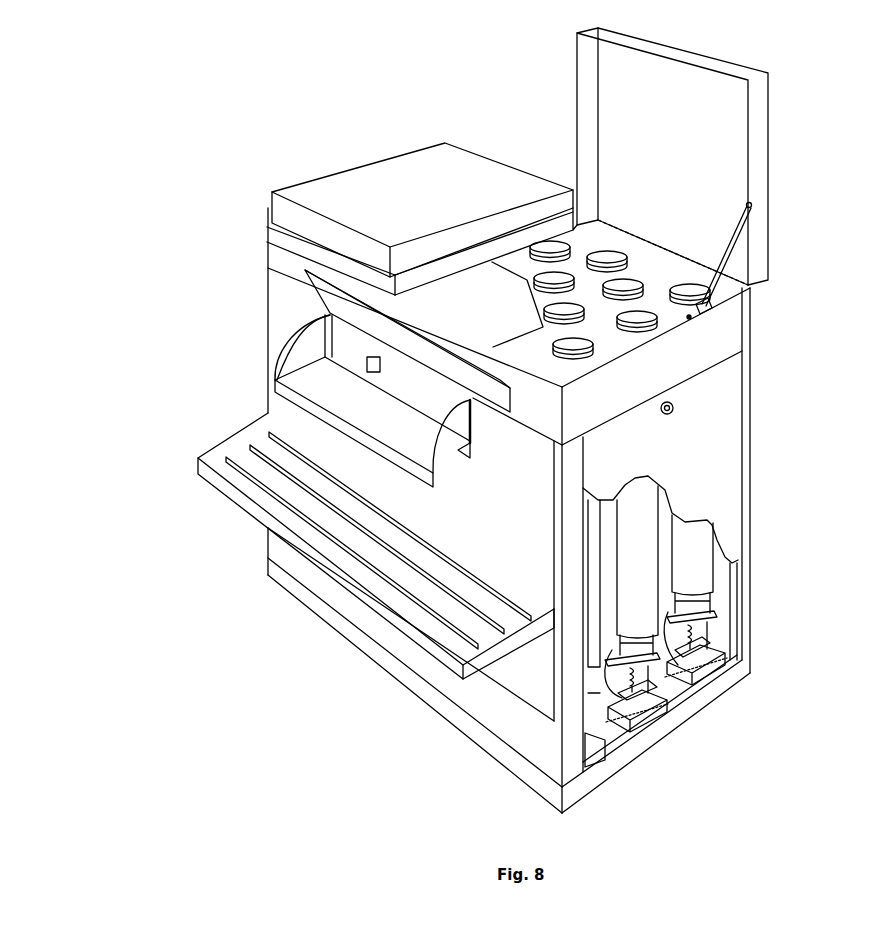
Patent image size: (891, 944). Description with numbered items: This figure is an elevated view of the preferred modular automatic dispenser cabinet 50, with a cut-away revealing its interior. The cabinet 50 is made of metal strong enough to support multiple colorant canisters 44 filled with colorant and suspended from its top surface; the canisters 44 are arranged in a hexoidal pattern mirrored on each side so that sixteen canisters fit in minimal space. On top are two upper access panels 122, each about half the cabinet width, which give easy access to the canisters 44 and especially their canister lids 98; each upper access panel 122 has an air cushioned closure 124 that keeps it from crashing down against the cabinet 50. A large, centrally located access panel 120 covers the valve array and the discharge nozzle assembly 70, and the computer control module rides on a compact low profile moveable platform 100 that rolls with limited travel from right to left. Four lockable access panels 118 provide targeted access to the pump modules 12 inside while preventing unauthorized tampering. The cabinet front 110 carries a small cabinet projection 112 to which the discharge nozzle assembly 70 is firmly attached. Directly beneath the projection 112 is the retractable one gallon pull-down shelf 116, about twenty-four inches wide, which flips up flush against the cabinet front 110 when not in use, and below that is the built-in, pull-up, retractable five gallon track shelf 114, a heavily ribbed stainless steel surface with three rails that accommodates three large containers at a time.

The moveable platform 100 is at (360, 188).
The large access panel 120 is at (485, 300).
The cabinet projection 112 is at (383, 327).
The one gallon pull-down shelf 116 is at (327, 392).
The cabinet front 110 is at (305, 423).
The five gallon track shelf 114 is at (308, 503).
The discharge nozzle assembly 70 is at (332, 313).
The modular automatic dispenser cabinet 50 is at (272, 650).
The upper access panel 122 is at (700, 100).
The air cushioned closure 124 is at (728, 257).
The canister lid 98 is at (640, 312).
The lockable access panel 118 is at (652, 452).
The colorant canister 44 is at (640, 538).
The pump module 12 is at (700, 651).